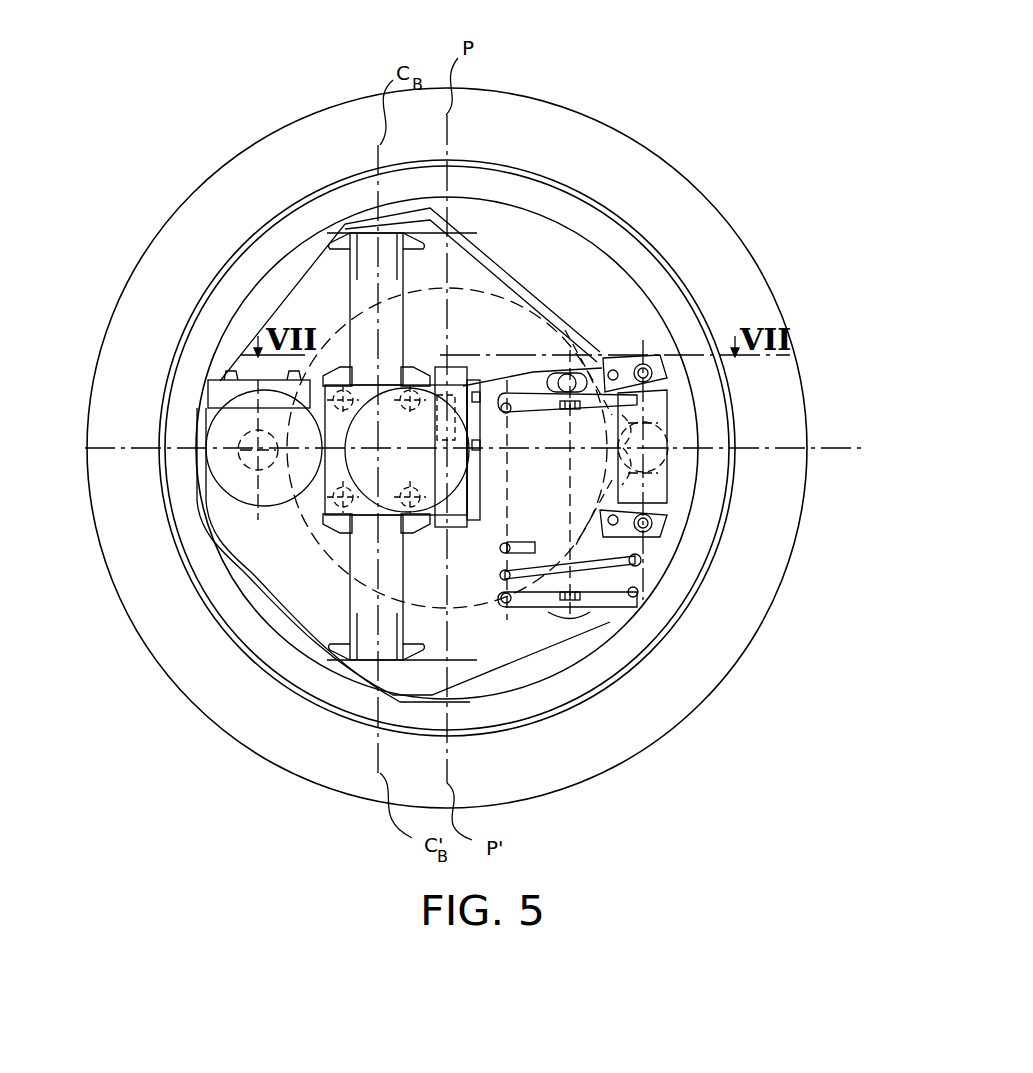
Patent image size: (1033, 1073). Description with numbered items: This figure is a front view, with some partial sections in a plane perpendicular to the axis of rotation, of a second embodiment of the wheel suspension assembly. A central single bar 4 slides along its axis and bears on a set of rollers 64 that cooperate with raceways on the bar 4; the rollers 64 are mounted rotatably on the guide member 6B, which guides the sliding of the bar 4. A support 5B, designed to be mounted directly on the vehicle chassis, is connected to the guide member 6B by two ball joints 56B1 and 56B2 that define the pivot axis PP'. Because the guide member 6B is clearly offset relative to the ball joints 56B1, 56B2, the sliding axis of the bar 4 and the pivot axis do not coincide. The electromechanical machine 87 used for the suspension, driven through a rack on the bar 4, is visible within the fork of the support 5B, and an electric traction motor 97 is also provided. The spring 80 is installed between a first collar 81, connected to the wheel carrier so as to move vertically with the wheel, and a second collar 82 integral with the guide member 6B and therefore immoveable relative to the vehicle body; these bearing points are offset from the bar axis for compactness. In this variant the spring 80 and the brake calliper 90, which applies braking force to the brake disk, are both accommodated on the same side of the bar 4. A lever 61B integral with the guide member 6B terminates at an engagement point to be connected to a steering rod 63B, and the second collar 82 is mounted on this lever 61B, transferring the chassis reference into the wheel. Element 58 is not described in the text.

The bar 4 is at (368, 658).
The support 5B is at (457, 370).
The guide member 6B is at (326, 513).
The ball joint 56B1 is at (470, 530).
The ball joint 56B2 is at (533, 380).
The shaft block 58 is at (462, 530).
The lever 61B is at (583, 368).
The steering rod 63B is at (600, 356).
The rollers 64 is at (395, 512).
The spring 80 is at (635, 592).
The first collar 81 is at (617, 607).
The second collar 82 is at (640, 378).
The electromechanical machine 87 is at (345, 433).
The brake calliper 90 is at (672, 440).
The electric traction motor 97 is at (222, 468).